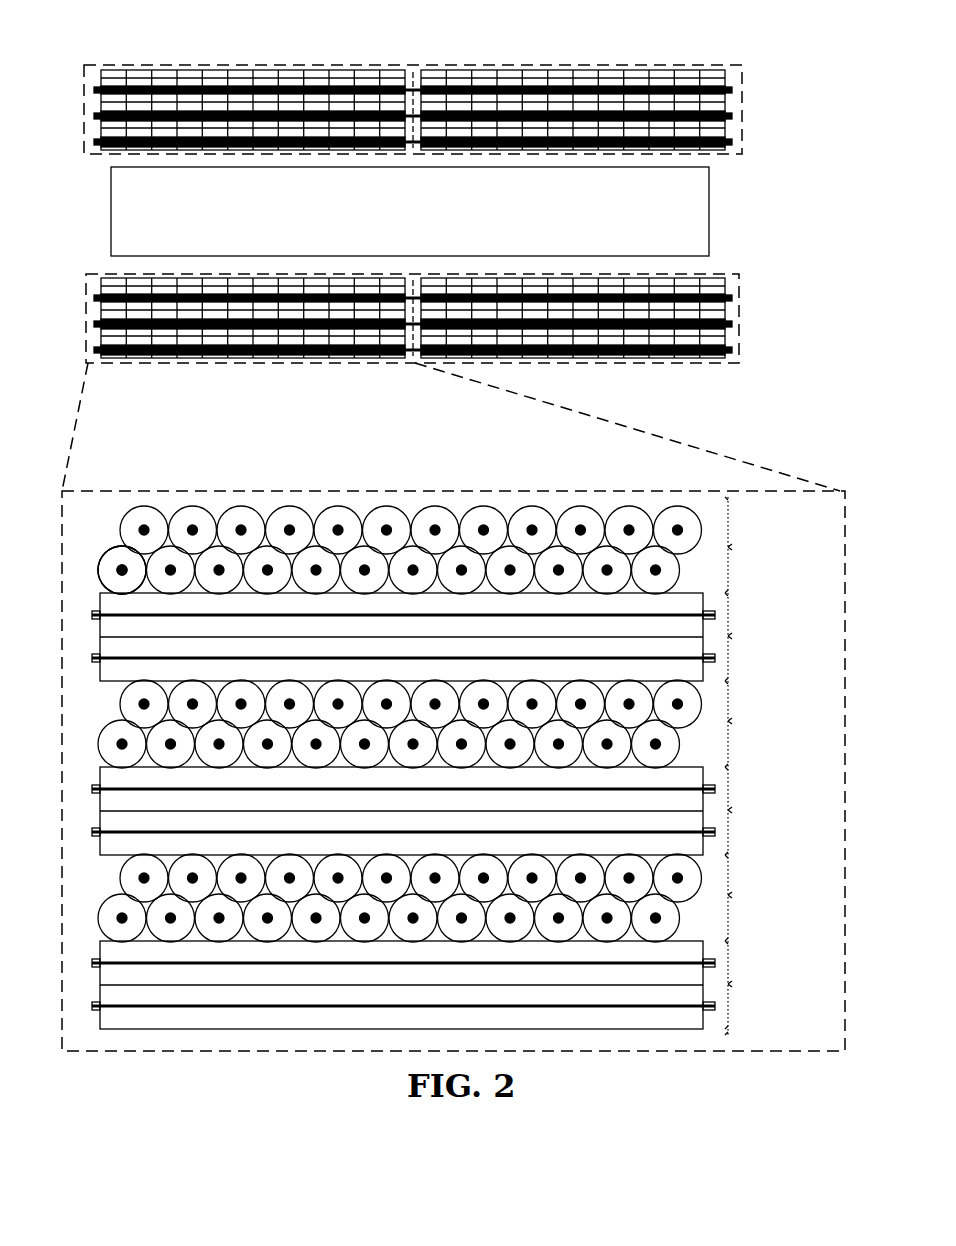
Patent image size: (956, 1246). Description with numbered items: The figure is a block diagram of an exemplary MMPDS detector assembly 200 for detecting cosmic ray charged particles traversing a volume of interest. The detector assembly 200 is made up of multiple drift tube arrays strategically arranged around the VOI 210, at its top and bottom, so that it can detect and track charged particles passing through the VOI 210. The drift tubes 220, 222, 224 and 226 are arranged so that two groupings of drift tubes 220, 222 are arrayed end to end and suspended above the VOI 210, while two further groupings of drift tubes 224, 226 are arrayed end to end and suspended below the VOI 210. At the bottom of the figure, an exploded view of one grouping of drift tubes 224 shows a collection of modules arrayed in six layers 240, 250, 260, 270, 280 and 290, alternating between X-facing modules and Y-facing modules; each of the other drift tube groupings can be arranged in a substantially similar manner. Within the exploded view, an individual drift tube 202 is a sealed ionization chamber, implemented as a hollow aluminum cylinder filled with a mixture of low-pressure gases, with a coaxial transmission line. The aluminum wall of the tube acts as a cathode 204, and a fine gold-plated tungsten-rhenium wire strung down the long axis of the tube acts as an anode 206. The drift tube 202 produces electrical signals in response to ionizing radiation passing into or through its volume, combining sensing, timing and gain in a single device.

The detector assembly 200 is at (760, 64).
The VOI 210 is at (410, 211).
The drift tubes 220 is at (105, 64).
The drift tubes 222 is at (445, 66).
The grouping of drift tubes 224 is at (103, 273).
The drift tubes 226 is at (714, 275).
The drift tube 202 is at (119, 556).
The cathode 204 is at (101, 560).
The anode 206 is at (116, 570).
The layer 240 is at (468, 550).
The layer 250 is at (464, 637).
The layer 260 is at (468, 724).
The layer 270 is at (464, 811).
The layer 280 is at (468, 898).
The layer 290 is at (464, 985).